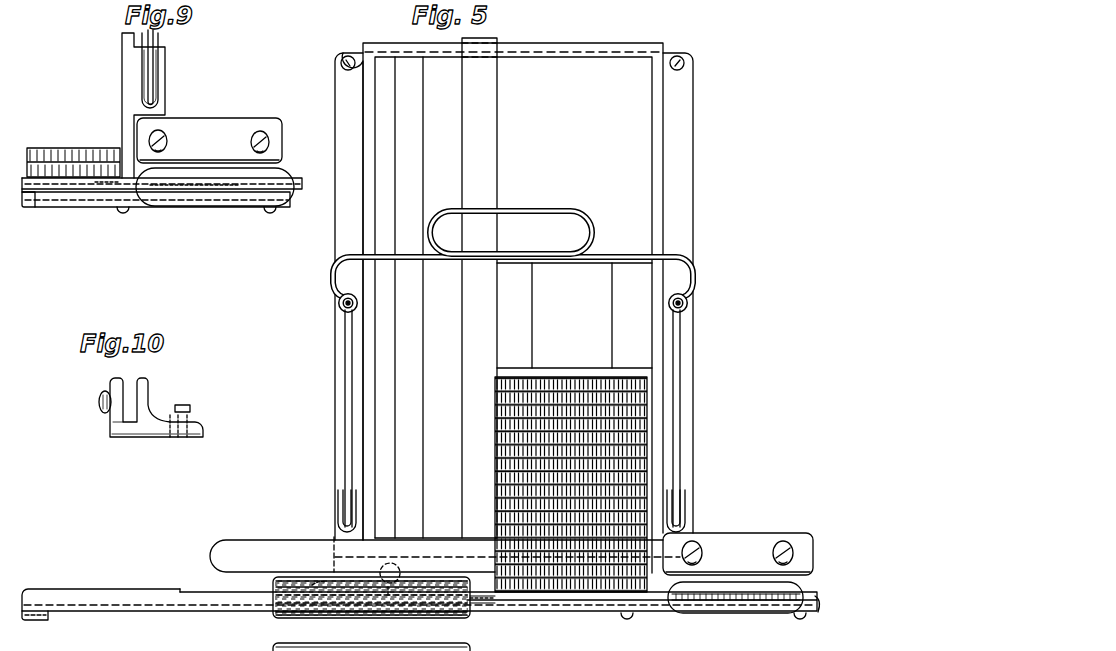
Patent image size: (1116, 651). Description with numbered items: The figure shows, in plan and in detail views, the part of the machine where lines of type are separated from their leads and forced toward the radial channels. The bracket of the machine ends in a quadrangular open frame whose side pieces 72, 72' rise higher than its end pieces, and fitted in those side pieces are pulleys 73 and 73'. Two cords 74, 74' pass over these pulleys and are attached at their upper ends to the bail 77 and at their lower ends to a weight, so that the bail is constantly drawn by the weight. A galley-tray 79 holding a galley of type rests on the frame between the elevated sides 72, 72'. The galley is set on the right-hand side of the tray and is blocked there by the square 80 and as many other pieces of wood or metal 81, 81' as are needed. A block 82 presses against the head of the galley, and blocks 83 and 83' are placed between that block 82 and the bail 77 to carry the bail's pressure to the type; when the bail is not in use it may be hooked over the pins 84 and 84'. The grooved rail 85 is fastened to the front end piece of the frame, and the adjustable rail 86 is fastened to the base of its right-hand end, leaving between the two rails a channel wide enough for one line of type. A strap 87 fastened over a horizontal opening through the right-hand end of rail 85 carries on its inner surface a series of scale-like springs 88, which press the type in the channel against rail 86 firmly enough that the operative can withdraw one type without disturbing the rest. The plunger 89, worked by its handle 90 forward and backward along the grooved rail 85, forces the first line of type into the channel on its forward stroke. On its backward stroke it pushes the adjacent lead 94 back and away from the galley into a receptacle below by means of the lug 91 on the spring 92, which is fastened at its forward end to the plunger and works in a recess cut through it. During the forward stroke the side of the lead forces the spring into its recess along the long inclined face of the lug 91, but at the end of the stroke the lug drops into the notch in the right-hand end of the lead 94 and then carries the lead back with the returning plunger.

In FIG. 5, the side piece 72 is at (349, 296).
In FIG. 5, the side piece 72' is at (678, 293).
In FIG. 5, the pulley 73 is at (330, 511).
In FIG. 5, the pulley 73' is at (694, 511).
In FIG. 9, the pulley 73' is at (159, 104).
In FIG. 5, the cord 74 is at (328, 418).
In FIG. 5, the cord 74' is at (698, 418).
In FIG. 5, the bail 77 is at (511, 222).
In FIG. 5, the galley-tray 79 is at (513, 308).
In FIG. 5, the square 80 is at (451, 305).
In FIG. 5, the piece of wood or metal 81 is at (436, 442).
In FIG. 5, the piece of wood or metal 81' is at (411, 297).
In FIG. 5, the block 82 is at (560, 375).
In FIG. 5, the block 83 is at (518, 315).
In FIG. 5, the block 83' is at (626, 315).
In FIG. 5, the pin 84 is at (343, 51).
In FIG. 5, the pin 84' is at (686, 51).
In FIG. 5, the grooved rail 85 is at (758, 613).
In FIG. 9, the grooved rail 85 is at (167, 196).
In FIG. 10, the grooved rail 85 is at (150, 437).
In FIG. 5, the adjustable rail 86 is at (738, 554).
In FIG. 9, the adjustable rail 86 is at (209, 140).
In FIG. 10, the adjustable rail 86 is at (156, 407).
In FIG. 5, the strap 87 is at (735, 608).
In FIG. 9, the strap 87 is at (215, 197).
In FIG. 5, the scale-like spring 88 is at (822, 614).
In FIG. 10, the scale-like spring 88 is at (127, 395).
In FIG. 5, the plunger 89 is at (186, 592).
In FIG. 9, the plunger 89 is at (172, 183).
In FIG. 5, the handle 90 is at (371, 614).
In FIG. 5, the lug 91 is at (400, 587).
In FIG. 9, the lug 91 is at (117, 183).
In FIG. 5, the spring 92 is at (477, 600).
In FIG. 9, the spring 92 is at (165, 186).
In FIG. 9, the lead 94 is at (24, 160).